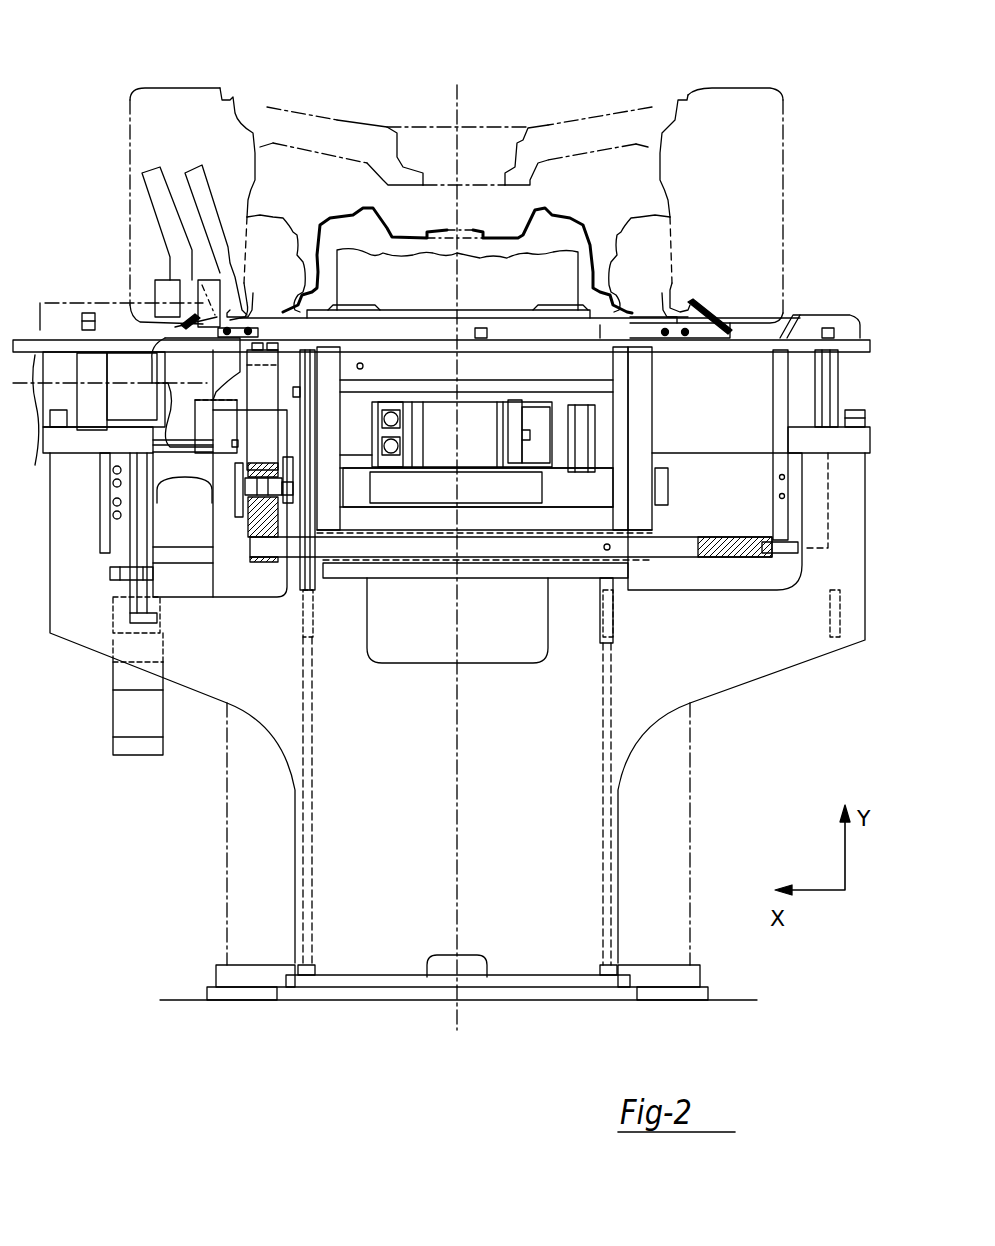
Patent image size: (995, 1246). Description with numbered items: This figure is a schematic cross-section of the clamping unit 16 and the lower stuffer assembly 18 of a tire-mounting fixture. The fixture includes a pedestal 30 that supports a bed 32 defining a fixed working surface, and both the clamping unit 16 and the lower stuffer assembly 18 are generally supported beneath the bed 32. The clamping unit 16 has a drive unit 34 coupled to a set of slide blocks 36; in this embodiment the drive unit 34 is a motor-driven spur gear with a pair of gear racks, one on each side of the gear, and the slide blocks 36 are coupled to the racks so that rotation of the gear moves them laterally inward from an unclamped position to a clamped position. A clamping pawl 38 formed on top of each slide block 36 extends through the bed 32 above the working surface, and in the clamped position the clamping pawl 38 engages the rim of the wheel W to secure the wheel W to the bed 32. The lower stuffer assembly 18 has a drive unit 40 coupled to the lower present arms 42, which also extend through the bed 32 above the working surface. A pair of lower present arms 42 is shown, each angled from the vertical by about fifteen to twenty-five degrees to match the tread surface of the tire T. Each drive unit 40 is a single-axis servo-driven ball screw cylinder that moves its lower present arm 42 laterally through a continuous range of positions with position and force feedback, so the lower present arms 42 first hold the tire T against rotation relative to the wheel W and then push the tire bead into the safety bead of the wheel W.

The clamping unit 16 is at (752, 311).
The lower stuffer assembly 18 is at (258, 513).
The pedestal 30 is at (377, 863).
The bed 32 is at (602, 325).
The drive unit 34 is at (286, 340).
The slide blocks 36 is at (698, 332).
The clamping pawl 38 is at (694, 311).
The drive unit 40 is at (478, 430).
The lower present arms 42 is at (187, 167).
The wheel W is at (658, 128).
The tire T is at (757, 113).